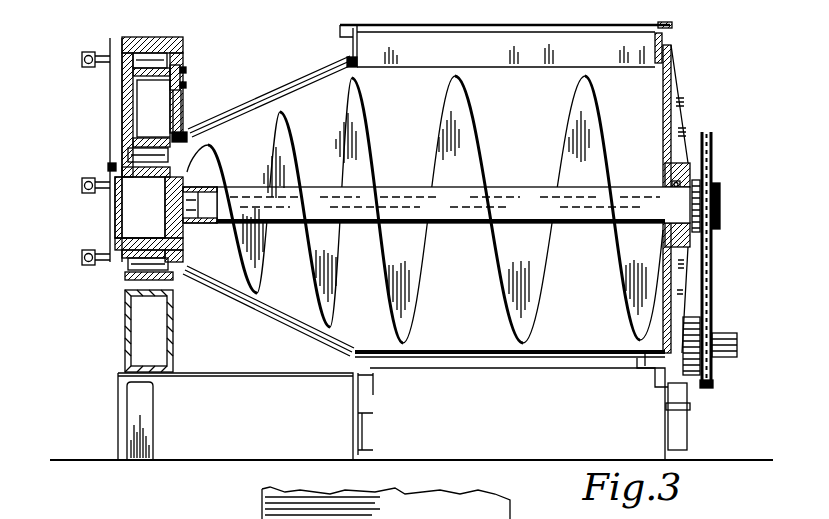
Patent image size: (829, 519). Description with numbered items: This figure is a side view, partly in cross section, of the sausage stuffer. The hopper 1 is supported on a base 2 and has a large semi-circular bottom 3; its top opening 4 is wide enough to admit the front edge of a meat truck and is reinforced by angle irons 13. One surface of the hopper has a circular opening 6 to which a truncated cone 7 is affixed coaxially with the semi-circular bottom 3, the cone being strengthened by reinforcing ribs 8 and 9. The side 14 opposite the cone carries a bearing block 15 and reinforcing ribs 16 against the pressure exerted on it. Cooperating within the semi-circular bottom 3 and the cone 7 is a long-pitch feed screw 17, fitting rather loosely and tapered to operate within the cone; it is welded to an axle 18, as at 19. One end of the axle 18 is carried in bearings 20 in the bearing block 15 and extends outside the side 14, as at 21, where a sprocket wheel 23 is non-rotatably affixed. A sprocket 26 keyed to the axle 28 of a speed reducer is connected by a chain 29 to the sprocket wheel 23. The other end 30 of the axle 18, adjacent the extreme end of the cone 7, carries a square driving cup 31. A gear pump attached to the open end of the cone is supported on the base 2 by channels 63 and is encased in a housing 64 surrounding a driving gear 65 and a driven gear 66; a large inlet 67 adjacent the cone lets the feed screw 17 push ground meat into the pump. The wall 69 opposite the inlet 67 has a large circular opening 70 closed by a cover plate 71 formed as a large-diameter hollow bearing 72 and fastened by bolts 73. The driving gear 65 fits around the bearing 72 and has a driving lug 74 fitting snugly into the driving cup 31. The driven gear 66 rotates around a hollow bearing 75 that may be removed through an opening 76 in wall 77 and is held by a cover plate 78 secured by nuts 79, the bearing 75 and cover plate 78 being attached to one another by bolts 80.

The hopper 1 is at (635, 90).
The base 2 is at (684, 428).
The semi-circular bottom 3 is at (490, 356).
The top opening 4 is at (562, 48).
The circular opening 6 is at (357, 74).
The truncated cone 7 is at (312, 102).
The reinforcing rib 8 is at (280, 84).
The reinforcing rib 9 is at (272, 328).
The angle irons 13 is at (672, 26).
The side 14 is at (673, 100).
The bearing block 15 is at (676, 165).
The reinforcing ribs 16 is at (682, 112).
The feed screw 17 is at (487, 118).
The axle 18 is at (520, 188).
The weld 19 is at (468, 202).
The bearings 20 is at (668, 186).
The outwardly extending portion 21 is at (722, 210).
The sprocket wheel 23 is at (713, 170).
The sprocket 26 is at (714, 386).
The axle of speed reducer 28 is at (738, 342).
The chain 29 is at (713, 254).
The other end of shaft 30 is at (196, 188).
The driving cup 31 is at (190, 223).
The channels 63 is at (125, 330).
The housing 64 is at (142, 38).
The driving gear 65 is at (158, 240).
The driven gear 66 is at (137, 152).
The inlet 67 is at (174, 262).
The wall 69 is at (120, 105).
The circular opening 70 is at (124, 199).
The cover plate 71 is at (124, 195).
The hollow bearing 72 is at (125, 218).
The bolts 73 is at (110, 166).
The driving lug 74 is at (165, 206).
The hollow bearing 75 is at (160, 100).
The opening 76 is at (180, 116).
The wall 77 is at (183, 38).
The cover plate 78 is at (183, 68).
The nuts 79 is at (185, 74).
The bolts 80 is at (186, 86).